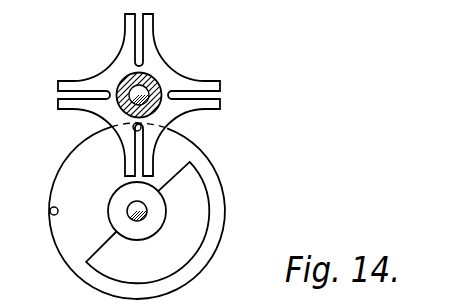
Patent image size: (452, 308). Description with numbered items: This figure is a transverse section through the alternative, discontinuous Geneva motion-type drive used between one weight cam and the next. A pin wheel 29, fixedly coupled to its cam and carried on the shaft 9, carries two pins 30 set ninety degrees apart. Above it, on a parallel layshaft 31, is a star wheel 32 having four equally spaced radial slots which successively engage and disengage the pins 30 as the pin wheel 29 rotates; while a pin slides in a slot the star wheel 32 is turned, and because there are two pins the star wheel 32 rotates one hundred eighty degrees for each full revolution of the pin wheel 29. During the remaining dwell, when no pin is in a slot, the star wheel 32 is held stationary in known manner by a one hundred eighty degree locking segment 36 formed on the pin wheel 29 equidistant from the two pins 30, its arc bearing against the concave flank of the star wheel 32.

The star wheel 32 is at (120, 57).
The layshaft 31 is at (142, 92).
The pins 30 is at (133, 129).
The pin wheel 29 is at (193, 265).
The locking segment 36 is at (185, 235).
The shaft 9 is at (147, 211).